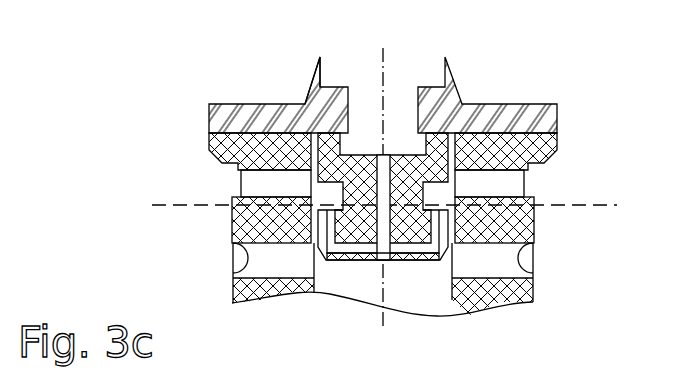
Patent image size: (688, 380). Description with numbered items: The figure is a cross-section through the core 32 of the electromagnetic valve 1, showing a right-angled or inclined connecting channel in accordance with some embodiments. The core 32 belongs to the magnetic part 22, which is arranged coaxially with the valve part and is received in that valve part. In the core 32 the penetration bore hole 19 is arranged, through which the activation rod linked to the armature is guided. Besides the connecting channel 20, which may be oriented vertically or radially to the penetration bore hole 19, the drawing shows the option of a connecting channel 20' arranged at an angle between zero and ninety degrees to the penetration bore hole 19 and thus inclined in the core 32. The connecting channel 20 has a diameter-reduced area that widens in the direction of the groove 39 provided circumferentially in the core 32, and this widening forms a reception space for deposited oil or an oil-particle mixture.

The electromagnetic valve 1 is at (331, 166).
The core 32 is at (237, 105).
The magnetic part 22 is at (275, 82).
The penetration bore hole 19 is at (387, 155).
The groove 39 is at (318, 208).
The connecting channel 20' is at (236, 220).
The connecting channel 20 is at (526, 220).